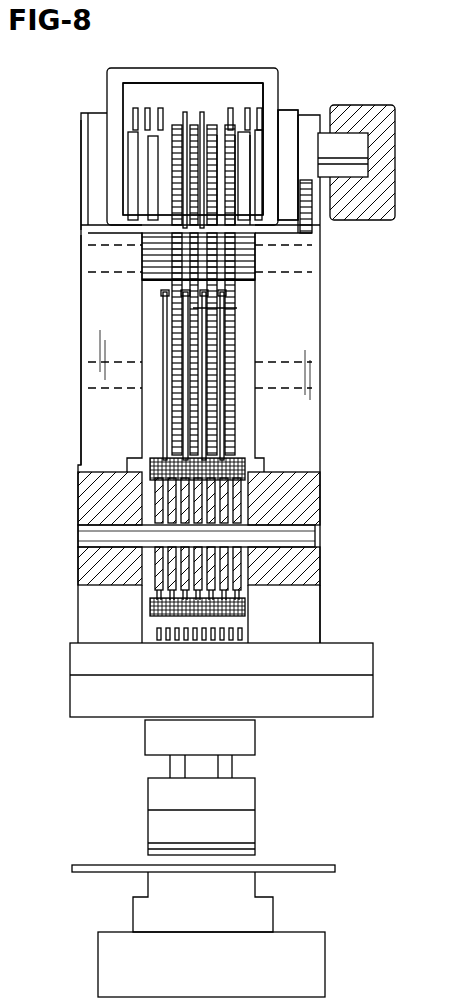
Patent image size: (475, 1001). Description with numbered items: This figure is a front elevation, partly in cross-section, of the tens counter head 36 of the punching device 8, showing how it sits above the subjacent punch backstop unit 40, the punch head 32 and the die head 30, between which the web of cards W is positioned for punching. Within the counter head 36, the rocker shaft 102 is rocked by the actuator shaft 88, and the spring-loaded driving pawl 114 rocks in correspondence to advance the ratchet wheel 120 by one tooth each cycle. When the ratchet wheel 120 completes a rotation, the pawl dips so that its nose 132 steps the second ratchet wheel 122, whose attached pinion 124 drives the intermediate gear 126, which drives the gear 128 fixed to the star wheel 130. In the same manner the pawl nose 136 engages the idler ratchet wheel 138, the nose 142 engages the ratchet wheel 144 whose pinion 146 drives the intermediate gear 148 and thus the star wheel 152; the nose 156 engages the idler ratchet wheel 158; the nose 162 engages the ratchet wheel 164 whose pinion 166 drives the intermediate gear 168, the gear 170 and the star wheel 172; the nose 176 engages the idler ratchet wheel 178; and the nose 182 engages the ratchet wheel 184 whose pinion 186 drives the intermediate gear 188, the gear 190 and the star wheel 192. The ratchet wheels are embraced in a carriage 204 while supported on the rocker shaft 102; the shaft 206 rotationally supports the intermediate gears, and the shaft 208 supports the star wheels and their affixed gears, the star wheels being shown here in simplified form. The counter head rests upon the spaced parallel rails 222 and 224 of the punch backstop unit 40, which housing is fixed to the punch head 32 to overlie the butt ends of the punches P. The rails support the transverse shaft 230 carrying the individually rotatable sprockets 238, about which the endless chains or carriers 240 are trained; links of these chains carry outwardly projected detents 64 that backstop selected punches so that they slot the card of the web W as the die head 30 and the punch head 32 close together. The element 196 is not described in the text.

The probe apparatus 8 is at (14, 112).
The carriage 204 is at (107, 78).
The 10's counter head 36 is at (133, 125).
The guide bar 196 is at (128, 125).
The pawl nose 176 is at (150, 143).
The pawl nose 156 is at (160, 148).
The pawl nose 136 is at (195, 162).
The ratchet wheel 138 is at (185, 175).
The ratchet wheel 164 is at (97, 192).
The rocker shaft 102 is at (105, 203).
The idler ratchet wheel 158 is at (150, 192).
The pawl nose 182 is at (167, 95).
The pinion 186 is at (160, 108).
The pinion 166 is at (193, 108).
The pawl nose 162 is at (205, 115).
The driving pawl 114 is at (222, 95).
The pinion 146 is at (240, 125).
The ratchet wheel 144 is at (235, 130).
The pawl nose 142 is at (242, 135).
The pawl nose 132 is at (245, 160).
The pinion 124 is at (255, 165).
The second ratchet wheel 122 is at (262, 175).
The actuator shaft 88 is at (380, 105).
The ratchet wheel 120 is at (318, 150).
The intermediate gear 126 is at (300, 232).
The idler ratchet wheel 178 is at (81, 243).
The shaft 206 is at (82, 287).
The ratchet wheel 184 is at (160, 240).
The intermediate gear 188 is at (175, 270).
The star wheel 192 is at (163, 303).
The shaft 208 is at (82, 398).
The star wheel 172 is at (193, 400).
The gear 190 is at (163, 447).
The intermediate gear 148 is at (215, 242).
The intermediate gear 168 is at (193, 263).
The gear 170 is at (237, 314).
The gear 128 is at (227, 320).
The star wheel 130 is at (220, 373).
The star wheel 152 is at (203, 400).
The punch backstop unit 40 is at (320, 508).
The shaft 230 is at (80, 533).
The sprocket 238 is at (245, 590).
The endless chain or carrier 240 is at (240, 612).
The detent 64 is at (235, 625).
The punch P is at (200, 641).
The rail 222 is at (78, 620).
The rail 224 is at (320, 630).
The punch head 32 is at (255, 845).
The web of cards W is at (333, 872).
The die head 30 is at (255, 885).